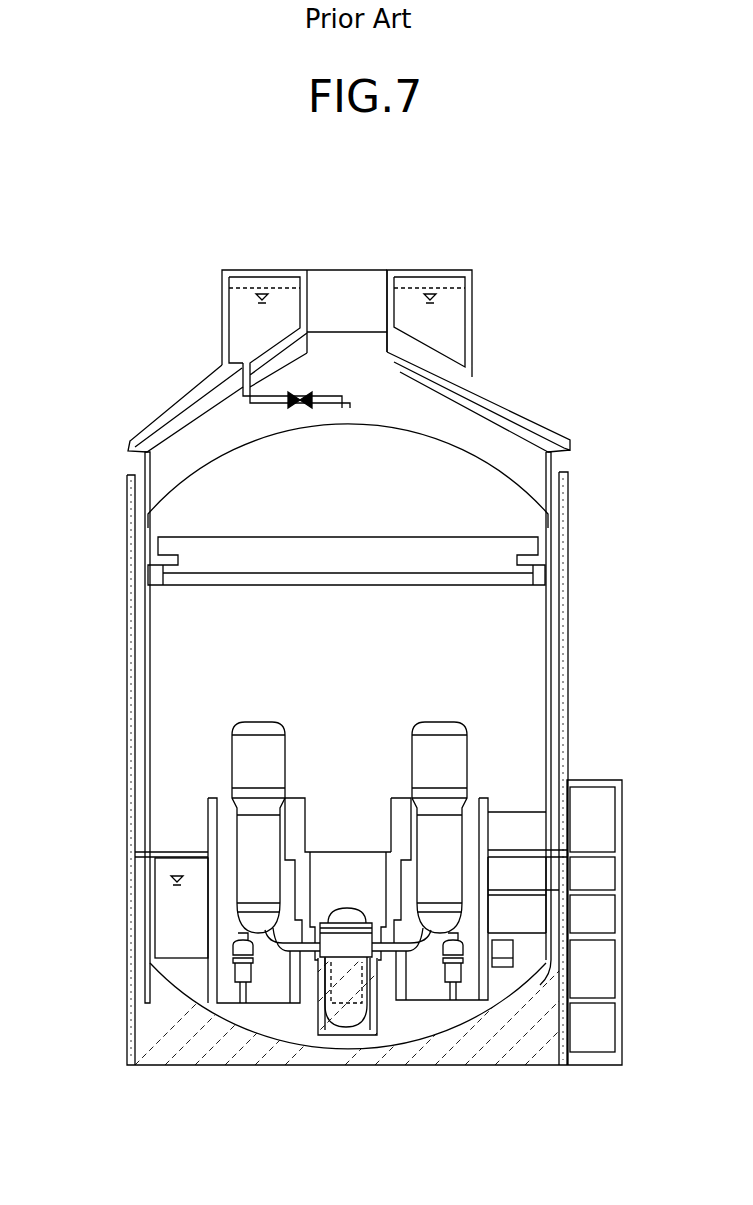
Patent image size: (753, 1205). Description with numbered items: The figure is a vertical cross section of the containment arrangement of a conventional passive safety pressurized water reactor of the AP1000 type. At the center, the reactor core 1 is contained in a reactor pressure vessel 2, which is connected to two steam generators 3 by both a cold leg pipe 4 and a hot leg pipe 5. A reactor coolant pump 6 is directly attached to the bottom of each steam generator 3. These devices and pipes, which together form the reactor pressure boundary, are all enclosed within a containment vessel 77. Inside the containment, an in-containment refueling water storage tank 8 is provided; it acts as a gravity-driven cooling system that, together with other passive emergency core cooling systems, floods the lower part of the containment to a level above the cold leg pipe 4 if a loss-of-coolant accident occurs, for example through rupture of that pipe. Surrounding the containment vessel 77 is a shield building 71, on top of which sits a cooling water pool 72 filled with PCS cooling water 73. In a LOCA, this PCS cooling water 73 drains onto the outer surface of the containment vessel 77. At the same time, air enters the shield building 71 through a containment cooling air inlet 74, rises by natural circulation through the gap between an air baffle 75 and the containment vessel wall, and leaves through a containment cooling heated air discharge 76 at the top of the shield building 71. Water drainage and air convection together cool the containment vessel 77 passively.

The reactor core 1 is at (353, 998).
The reactor pressure vessel 2 is at (347, 1017).
The steam generator 3 is at (232, 728).
The cold leg pipe 4 is at (432, 972).
The hot leg pipe 5 is at (291, 955).
The reactor coolant pump 6 is at (238, 990).
The in-containment refueling water storage tank 8 is at (172, 925).
The shield building 71 is at (128, 505).
The cooling water pool 72 is at (222, 300).
The PCS cooling water 73 is at (240, 345).
The containment cooling air inlet 74 is at (130, 465).
The air baffle 75 is at (147, 645).
The containment cooling heated air discharge 76 is at (353, 290).
The containment vessel 77 is at (584, 694).